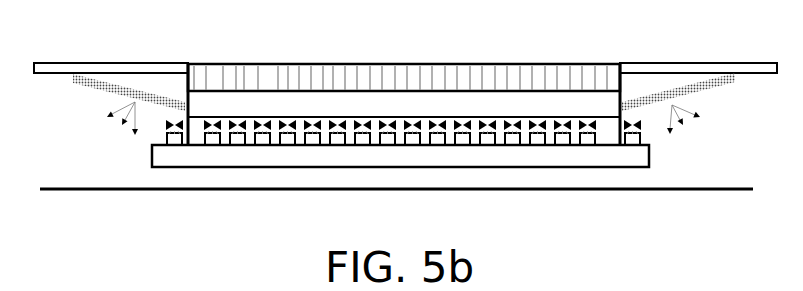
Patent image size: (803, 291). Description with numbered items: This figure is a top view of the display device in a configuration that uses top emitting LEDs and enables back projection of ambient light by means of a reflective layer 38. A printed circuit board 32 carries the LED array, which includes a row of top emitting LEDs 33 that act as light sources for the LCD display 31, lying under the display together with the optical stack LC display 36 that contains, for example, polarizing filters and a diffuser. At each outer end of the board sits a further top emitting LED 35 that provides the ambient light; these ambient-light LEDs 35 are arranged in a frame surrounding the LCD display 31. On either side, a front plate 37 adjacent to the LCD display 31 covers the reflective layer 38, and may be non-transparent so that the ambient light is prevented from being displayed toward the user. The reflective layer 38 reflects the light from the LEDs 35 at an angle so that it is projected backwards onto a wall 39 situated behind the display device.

The LCD display 31 is at (542, 72).
The printed circuit board 32 is at (635, 157).
The LEDs 33 is at (440, 140).
The LEDs 35 is at (166, 142).
The optical stack LC display 36 is at (595, 105).
The front plate 37 is at (50, 66).
The reflective layer 38 is at (150, 96).
The wall 39 is at (614, 190).